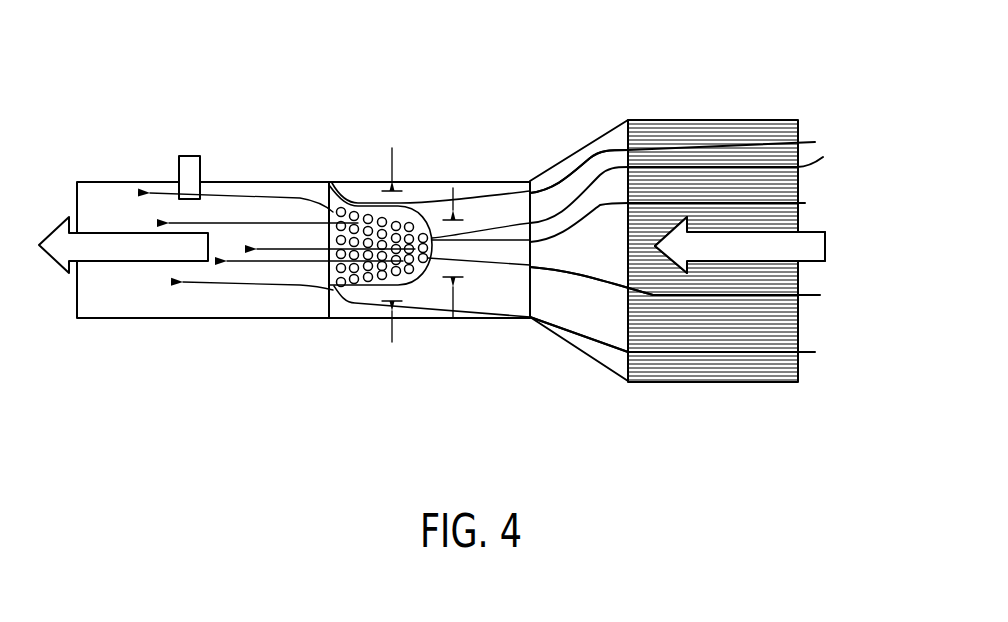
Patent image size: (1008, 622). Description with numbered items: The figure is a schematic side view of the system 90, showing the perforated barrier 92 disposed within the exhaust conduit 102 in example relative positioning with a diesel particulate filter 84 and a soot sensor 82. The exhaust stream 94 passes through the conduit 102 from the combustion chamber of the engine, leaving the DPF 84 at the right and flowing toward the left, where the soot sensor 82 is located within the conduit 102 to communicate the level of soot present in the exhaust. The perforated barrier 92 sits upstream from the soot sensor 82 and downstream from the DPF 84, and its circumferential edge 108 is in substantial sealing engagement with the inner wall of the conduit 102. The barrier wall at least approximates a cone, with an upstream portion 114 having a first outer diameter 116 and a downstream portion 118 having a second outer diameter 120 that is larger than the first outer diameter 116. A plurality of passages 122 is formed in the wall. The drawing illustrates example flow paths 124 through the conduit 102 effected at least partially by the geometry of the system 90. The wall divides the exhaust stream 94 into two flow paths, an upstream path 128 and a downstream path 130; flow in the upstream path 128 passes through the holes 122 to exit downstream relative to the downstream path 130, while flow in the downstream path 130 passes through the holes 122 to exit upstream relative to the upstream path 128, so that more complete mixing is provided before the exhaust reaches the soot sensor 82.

The soot sensor 82 is at (190, 156).
The diesel particulate filter 84 is at (672, 120).
The system 90 is at (480, 63).
The perforated barrier 92 is at (345, 202).
The exhaust stream 94 is at (58, 224).
The exhaust conduit 102 is at (480, 182).
The circumferential edge 108 is at (332, 318).
The upstream portion 114 is at (430, 247).
The first outer diameter 116 is at (455, 317).
The downstream portion 118 is at (343, 293).
The second outer diameter 120 is at (393, 327).
The passages 122 is at (333, 213).
The flow paths 124 is at (676, 250).
The upstream path 128 is at (602, 280).
The downstream path 130 is at (570, 170).